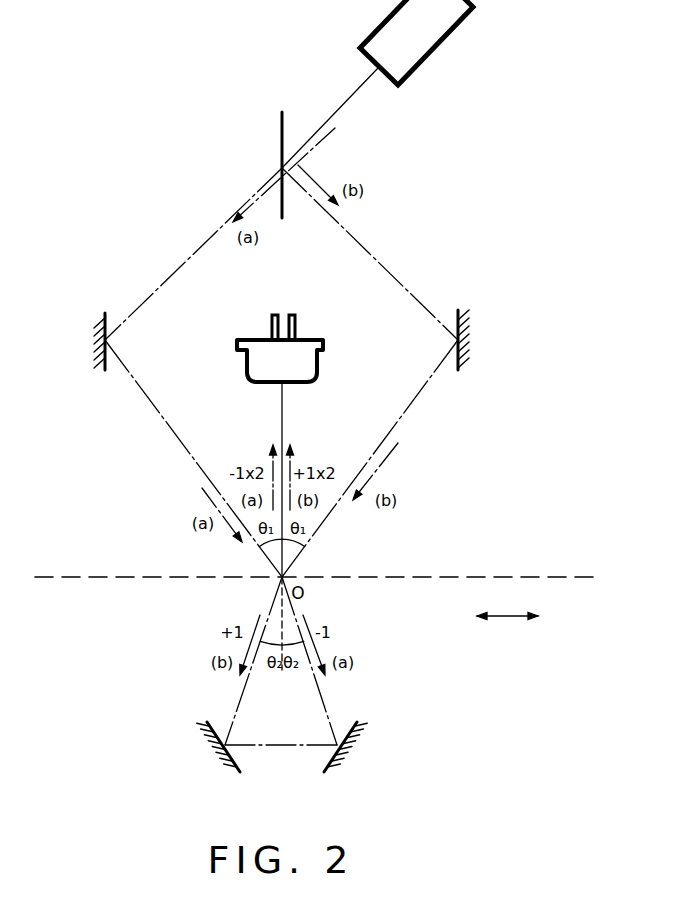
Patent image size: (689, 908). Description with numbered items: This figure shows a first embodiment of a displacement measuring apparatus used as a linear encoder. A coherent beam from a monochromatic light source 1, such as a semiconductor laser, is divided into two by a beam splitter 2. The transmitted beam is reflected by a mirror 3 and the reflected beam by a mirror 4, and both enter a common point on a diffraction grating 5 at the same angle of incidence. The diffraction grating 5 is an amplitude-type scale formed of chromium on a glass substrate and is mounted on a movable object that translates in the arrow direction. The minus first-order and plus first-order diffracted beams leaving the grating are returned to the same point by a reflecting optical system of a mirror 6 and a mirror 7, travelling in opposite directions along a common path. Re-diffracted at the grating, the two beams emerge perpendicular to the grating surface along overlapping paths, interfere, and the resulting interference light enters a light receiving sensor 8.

The monochromatic light source 1 is at (447, 40).
The beam splitter 2 is at (283, 208).
The mirror 3 is at (100, 332).
The mirror 4 is at (465, 338).
The diffraction grating 5 is at (557, 577).
The mirror 6 is at (218, 750).
The mirror 7 is at (340, 756).
The light receiving sensor 8 is at (317, 370).